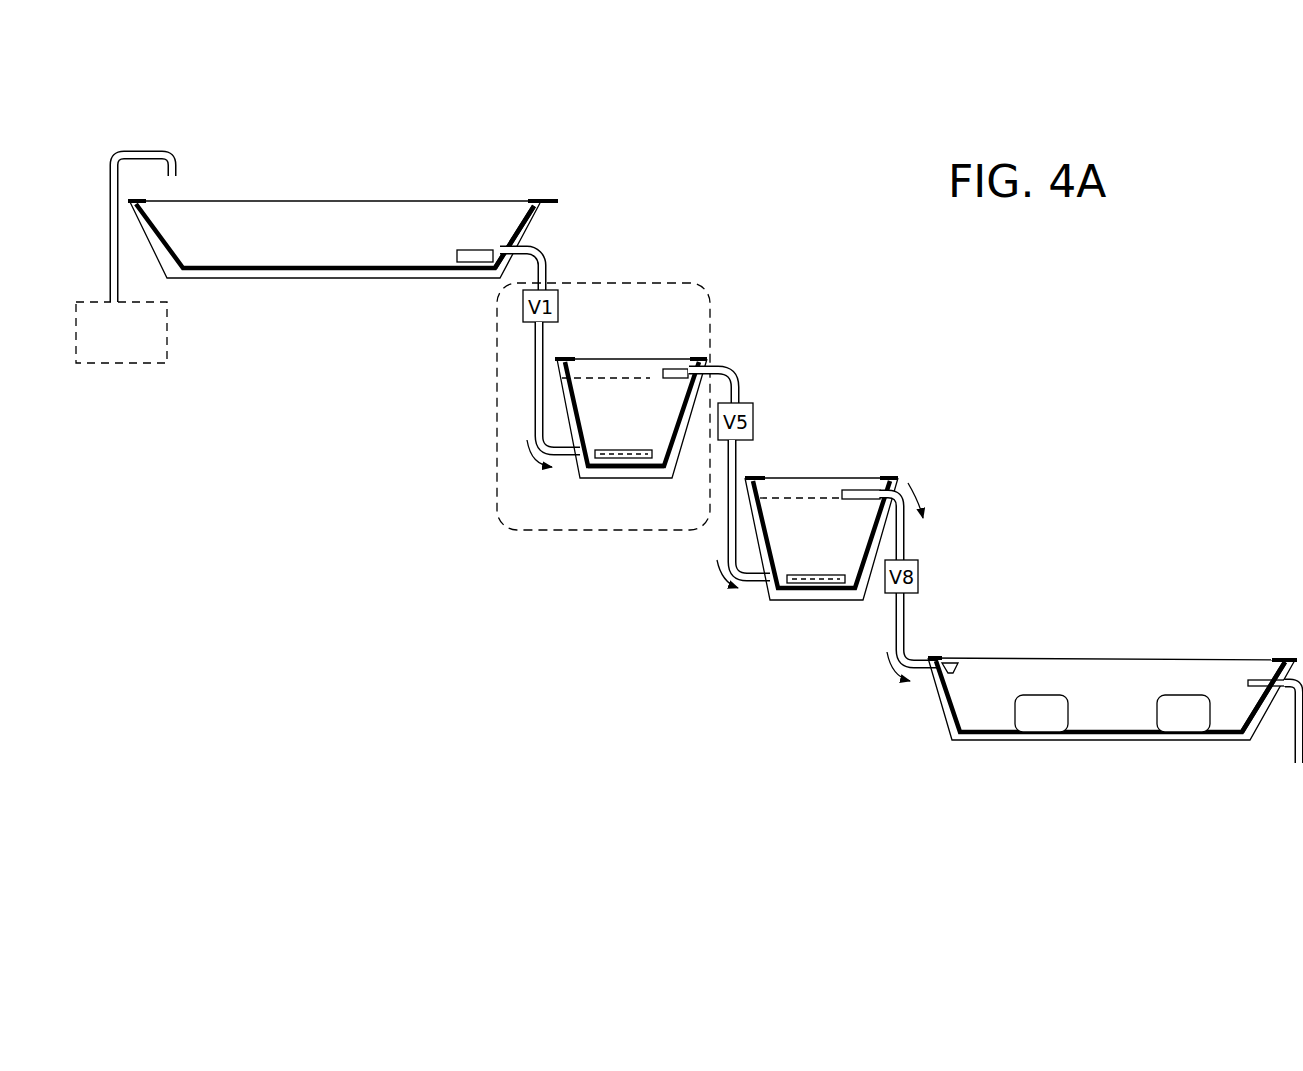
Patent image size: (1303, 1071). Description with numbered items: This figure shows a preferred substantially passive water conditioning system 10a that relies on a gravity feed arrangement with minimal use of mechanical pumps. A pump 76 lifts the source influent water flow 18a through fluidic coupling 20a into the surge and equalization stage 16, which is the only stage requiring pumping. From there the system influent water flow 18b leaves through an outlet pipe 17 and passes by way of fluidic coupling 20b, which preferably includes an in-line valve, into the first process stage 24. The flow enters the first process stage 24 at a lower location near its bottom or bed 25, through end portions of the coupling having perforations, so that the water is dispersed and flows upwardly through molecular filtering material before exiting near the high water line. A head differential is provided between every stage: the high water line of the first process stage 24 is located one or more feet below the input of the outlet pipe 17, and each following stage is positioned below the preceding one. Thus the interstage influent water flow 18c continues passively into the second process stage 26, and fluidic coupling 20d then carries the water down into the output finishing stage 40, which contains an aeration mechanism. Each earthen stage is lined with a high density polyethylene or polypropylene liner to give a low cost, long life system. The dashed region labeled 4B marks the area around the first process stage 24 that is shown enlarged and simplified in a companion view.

The water conditioning apparatus 10a is at (378, 626).
The surge and equalization stage 16 is at (420, 292).
The outlet pipe or tubing 17 is at (462, 251).
The source influent water flow 18a is at (185, 158).
The system influent water flow 18b is at (548, 262).
The interstage influent water flow 18c is at (745, 387).
The fluidic coupling 20a is at (114, 150).
The fluidic coupling 20b is at (542, 350).
The fluidic coupling 20d is at (906, 612).
The first process stage 24 is at (594, 486).
The bottom or bed 25 is at (664, 463).
The second process stage 26 is at (782, 616).
The output finishing stage or pond 40 is at (1002, 782).
The pump or pump module 76 is at (140, 363).
The enlarged view region of FIG. 4B is at (712, 310).